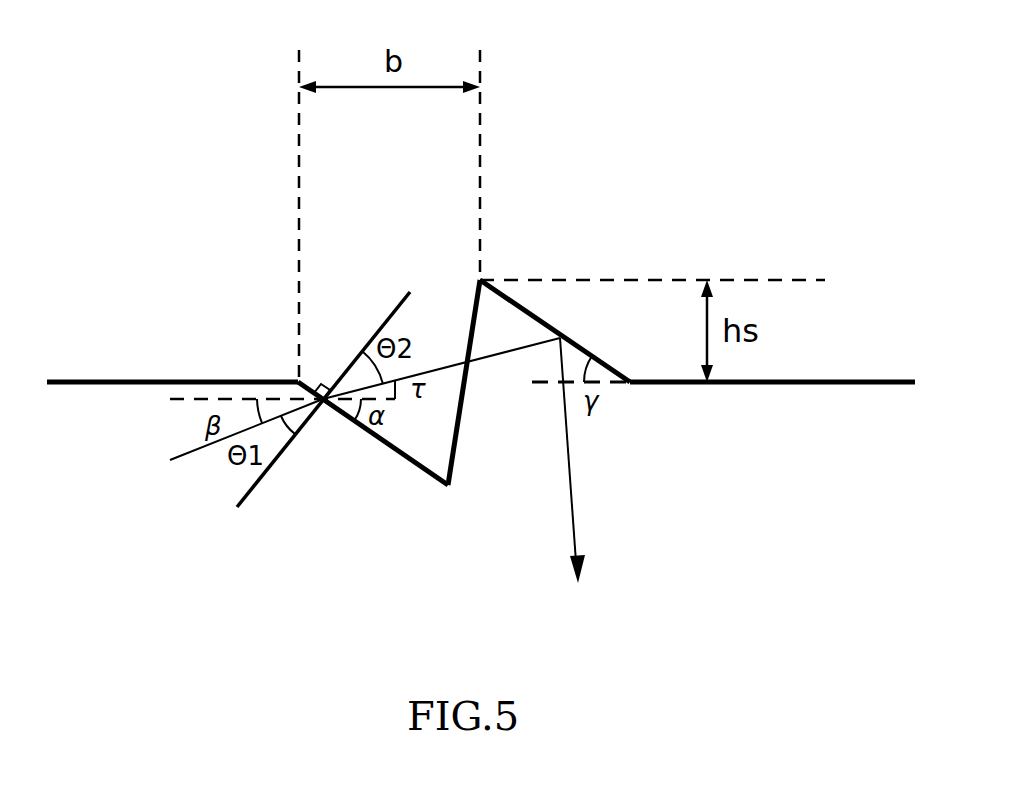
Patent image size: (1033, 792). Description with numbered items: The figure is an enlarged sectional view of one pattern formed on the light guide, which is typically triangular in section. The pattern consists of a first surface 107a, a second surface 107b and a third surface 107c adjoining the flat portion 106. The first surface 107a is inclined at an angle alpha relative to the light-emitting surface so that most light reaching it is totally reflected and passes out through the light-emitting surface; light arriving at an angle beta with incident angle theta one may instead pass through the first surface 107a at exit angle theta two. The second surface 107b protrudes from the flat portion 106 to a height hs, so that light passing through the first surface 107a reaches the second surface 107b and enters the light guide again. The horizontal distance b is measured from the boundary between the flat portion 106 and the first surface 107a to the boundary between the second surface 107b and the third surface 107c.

The flat portion 106 is at (138, 382).
The first surface 107a is at (402, 457).
The second surface 107b is at (473, 300).
The third surface 107c is at (526, 310).